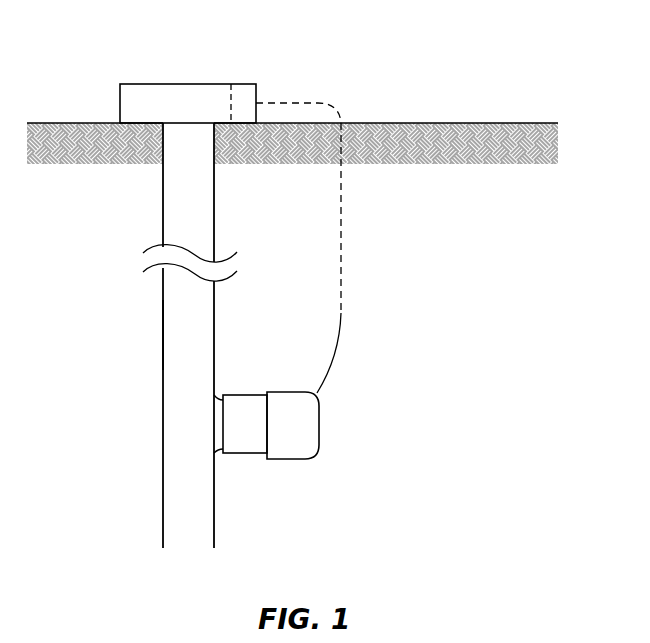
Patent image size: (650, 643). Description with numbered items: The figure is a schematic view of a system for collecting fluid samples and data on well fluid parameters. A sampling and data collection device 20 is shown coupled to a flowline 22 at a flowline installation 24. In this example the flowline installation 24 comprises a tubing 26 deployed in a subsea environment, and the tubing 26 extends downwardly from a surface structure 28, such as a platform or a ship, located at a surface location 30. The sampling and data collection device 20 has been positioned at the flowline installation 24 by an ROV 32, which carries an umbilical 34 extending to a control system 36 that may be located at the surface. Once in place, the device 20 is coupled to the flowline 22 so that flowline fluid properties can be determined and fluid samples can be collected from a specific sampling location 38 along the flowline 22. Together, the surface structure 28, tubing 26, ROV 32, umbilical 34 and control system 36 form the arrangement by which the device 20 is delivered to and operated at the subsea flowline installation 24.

The sampling and data collection device 20 is at (250, 453).
The flowline 22 is at (216, 320).
The flowline installation 24 is at (227, 477).
The tubing 26 is at (163, 335).
The surface structure 28 is at (120, 103).
The surface location 30 is at (440, 123).
The ROV 32 is at (319, 428).
The umbilical 34 is at (342, 328).
The control system 36 is at (243, 97).
The sampling location 38 is at (188, 398).